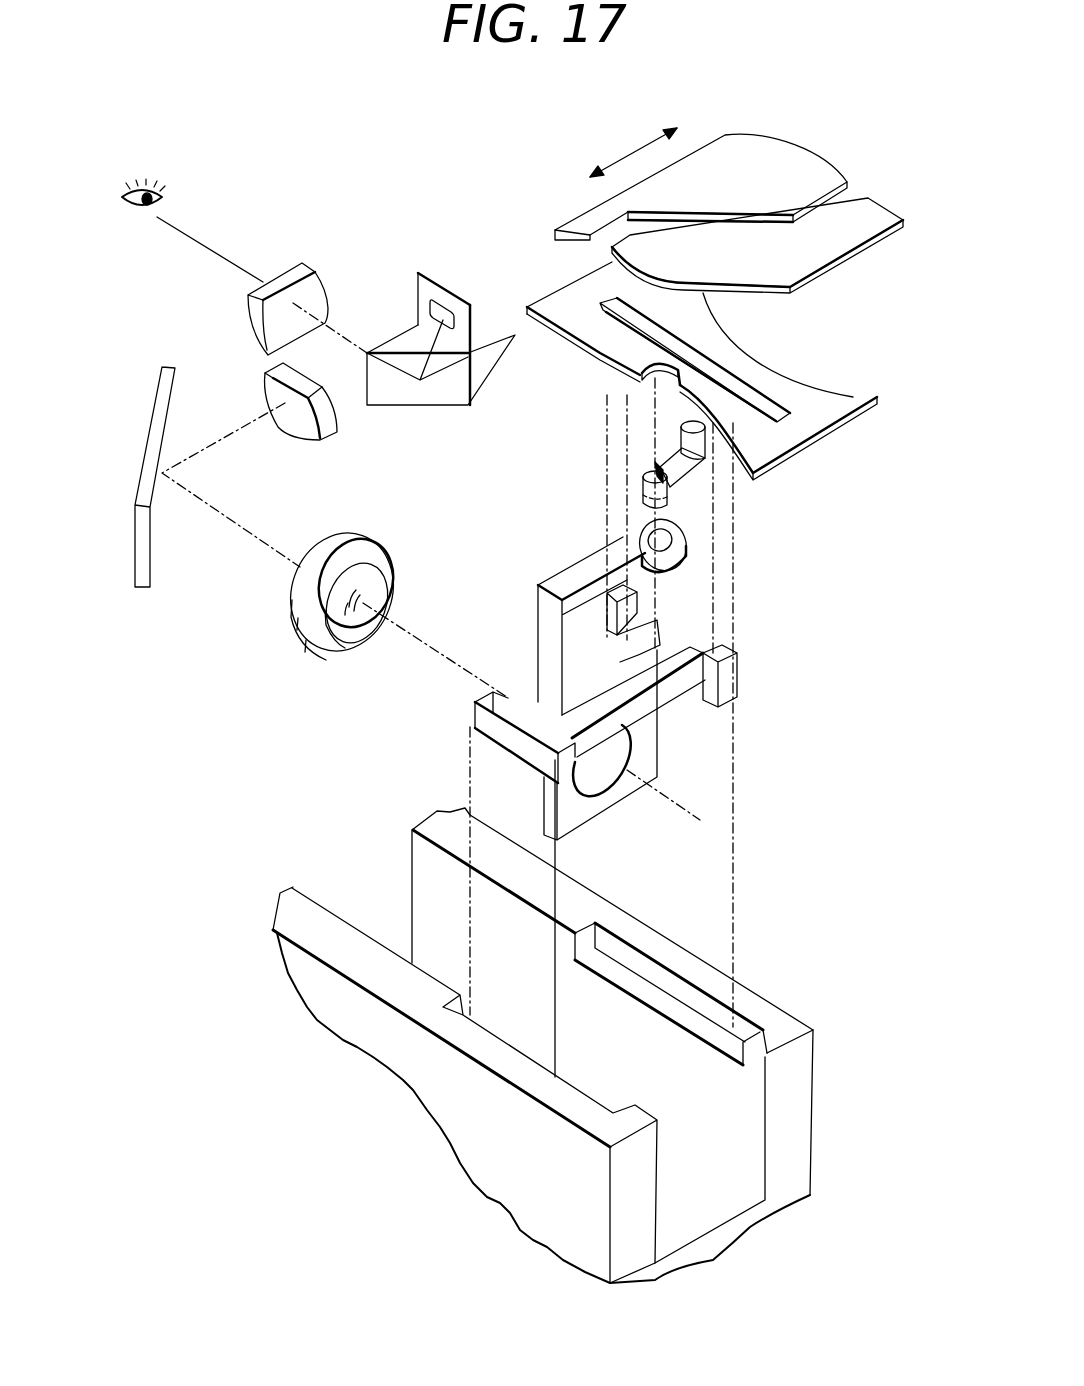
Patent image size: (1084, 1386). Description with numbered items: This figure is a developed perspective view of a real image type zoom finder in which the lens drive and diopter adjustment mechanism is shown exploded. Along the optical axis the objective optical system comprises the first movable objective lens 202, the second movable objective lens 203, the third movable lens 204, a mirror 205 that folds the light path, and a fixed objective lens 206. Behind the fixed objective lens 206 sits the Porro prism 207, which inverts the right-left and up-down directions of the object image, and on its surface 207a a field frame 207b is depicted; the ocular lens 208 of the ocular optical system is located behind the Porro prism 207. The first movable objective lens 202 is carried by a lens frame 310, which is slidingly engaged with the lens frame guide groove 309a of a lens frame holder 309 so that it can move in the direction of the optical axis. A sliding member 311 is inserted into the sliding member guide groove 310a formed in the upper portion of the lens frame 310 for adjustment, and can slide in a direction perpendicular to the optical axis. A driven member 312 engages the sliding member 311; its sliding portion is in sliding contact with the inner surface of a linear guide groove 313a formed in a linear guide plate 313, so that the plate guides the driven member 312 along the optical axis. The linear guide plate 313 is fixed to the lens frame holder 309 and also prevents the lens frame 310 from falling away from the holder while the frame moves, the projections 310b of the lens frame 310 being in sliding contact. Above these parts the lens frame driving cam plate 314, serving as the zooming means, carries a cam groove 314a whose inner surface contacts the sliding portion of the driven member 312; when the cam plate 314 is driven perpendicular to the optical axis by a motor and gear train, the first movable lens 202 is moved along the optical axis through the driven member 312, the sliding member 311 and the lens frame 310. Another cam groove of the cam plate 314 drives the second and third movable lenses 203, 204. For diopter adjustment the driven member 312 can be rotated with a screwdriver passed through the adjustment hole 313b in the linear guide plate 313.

The first movable objective lens 202 is at (603, 773).
The second movable objective lens 203 is at (381, 580).
The third movable lens 204 is at (345, 540).
The mirror 205 is at (140, 590).
The fixed objective lens 206 is at (274, 370).
The Porro prism 207 is at (448, 288).
The surface of Porro prism 207a is at (419, 292).
The field frame 207b is at (444, 314).
The ocular lens 208 is at (292, 270).
The lens frame holder 309 is at (545, 1045).
The lens frame guide groove 309a is at (653, 973).
The lens frame 310 is at (666, 681).
The sliding member guide groove 310a is at (647, 664).
The projections 310b is at (717, 665).
The sliding member 311 is at (578, 573).
The driven member 312 is at (687, 478).
The linear guide plate 313 is at (712, 371).
The linear guide groove 313a is at (777, 397).
The adjustment hole 313b is at (624, 376).
The lens frame driving cam plate 314 is at (835, 182).
The cam groove 314a is at (812, 205).